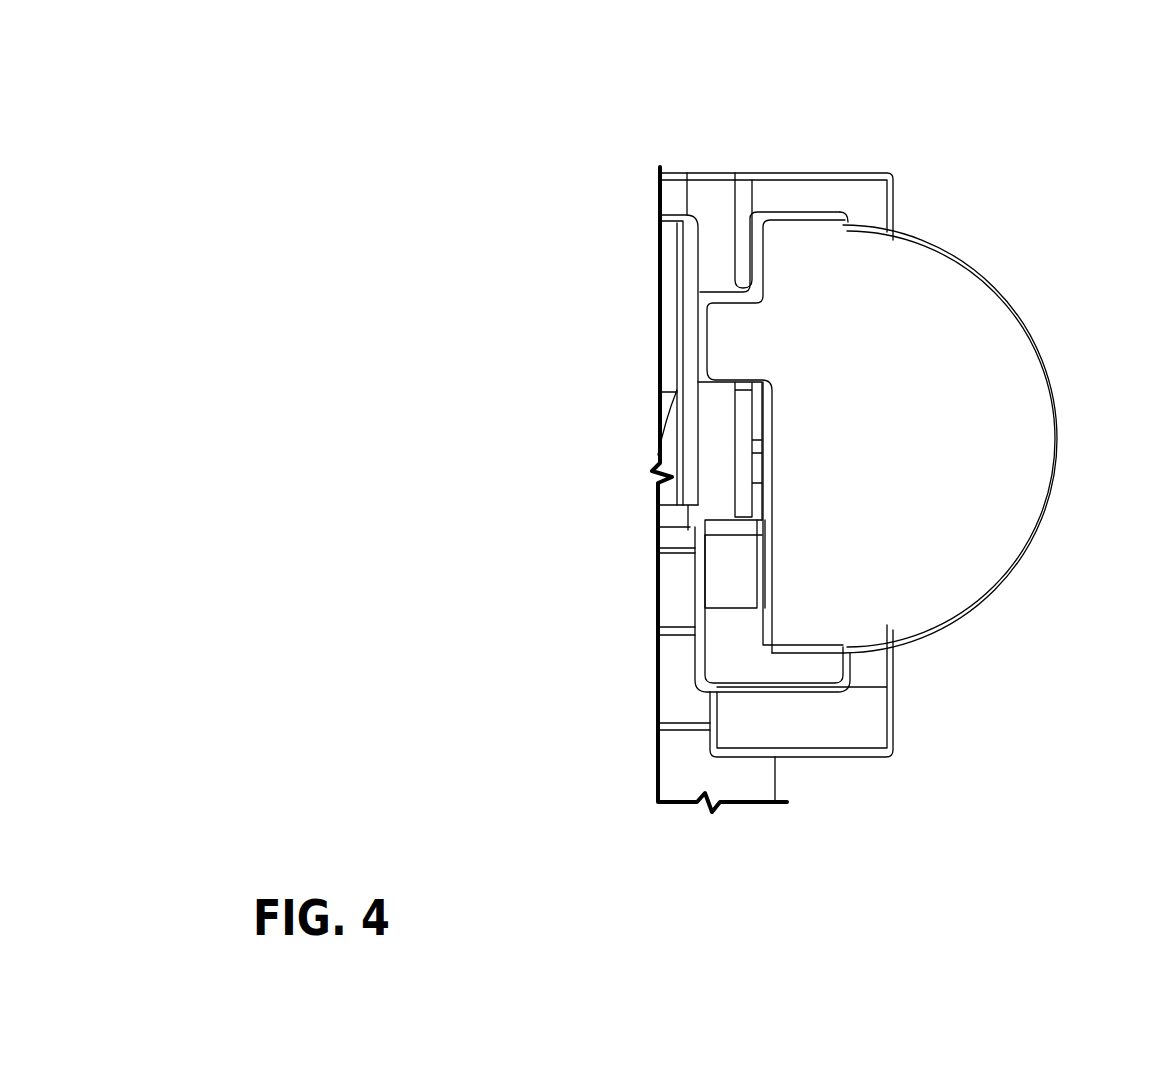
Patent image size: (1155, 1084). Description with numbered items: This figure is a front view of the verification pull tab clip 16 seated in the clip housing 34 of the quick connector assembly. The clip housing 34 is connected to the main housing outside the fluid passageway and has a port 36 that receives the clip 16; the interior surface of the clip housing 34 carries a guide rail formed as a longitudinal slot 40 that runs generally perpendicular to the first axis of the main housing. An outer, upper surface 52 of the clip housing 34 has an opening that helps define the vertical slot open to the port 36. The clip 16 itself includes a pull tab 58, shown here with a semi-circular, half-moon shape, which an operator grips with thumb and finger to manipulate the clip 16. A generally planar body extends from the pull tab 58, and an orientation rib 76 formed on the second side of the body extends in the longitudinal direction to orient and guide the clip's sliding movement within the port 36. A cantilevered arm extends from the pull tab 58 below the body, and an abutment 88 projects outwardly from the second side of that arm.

The verification pull tab clip 16 is at (998, 413).
The clip housing 34 is at (899, 693).
The port 36 is at (812, 680).
The longitudinal slot 40 is at (717, 297).
The outer surface 52 is at (806, 172).
The pull tab 58 is at (1057, 452).
The orientation rib 76 is at (707, 353).
The abutment 88 is at (705, 520).